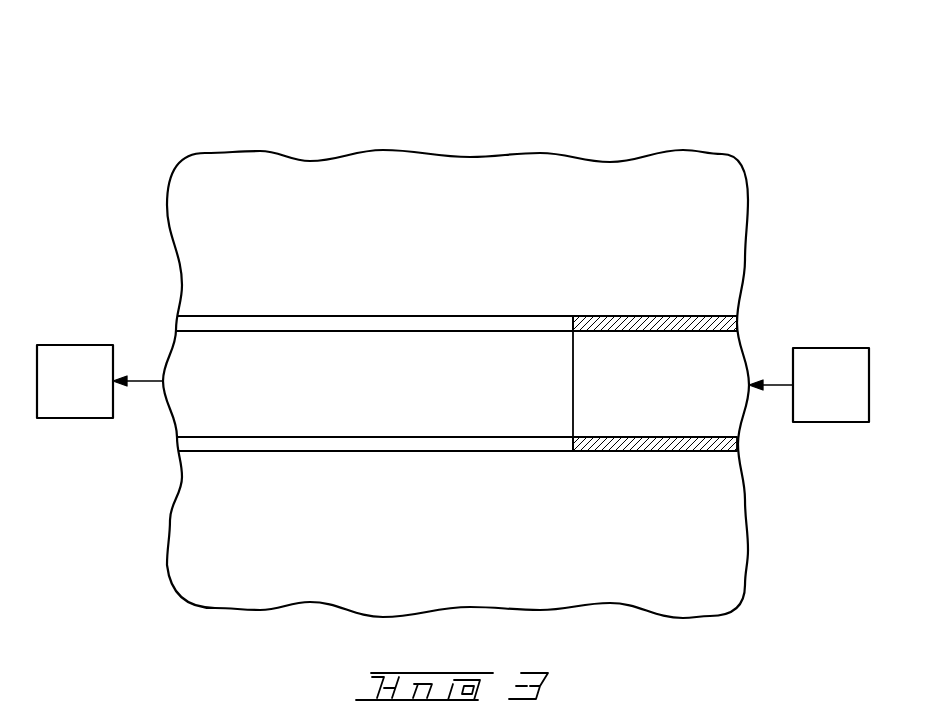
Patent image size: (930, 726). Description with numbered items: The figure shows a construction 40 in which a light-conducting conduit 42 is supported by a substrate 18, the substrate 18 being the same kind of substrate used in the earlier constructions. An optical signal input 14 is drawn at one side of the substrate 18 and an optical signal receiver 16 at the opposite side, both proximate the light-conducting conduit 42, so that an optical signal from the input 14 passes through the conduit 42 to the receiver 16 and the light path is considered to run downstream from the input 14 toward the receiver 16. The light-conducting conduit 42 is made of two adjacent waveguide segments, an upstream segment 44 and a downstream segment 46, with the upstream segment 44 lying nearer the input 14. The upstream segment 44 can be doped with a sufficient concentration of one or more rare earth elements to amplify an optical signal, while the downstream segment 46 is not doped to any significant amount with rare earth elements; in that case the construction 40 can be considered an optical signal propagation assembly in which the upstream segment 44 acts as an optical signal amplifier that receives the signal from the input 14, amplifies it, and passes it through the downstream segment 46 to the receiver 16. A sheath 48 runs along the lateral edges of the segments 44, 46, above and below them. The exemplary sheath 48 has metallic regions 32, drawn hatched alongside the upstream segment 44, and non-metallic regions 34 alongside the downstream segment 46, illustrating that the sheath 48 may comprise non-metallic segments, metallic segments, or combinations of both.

The optical signal input 14 is at (853, 400).
The optical signal receiver 16 is at (92, 397).
The substrate 18 is at (700, 215).
The metallic regions 32 is at (700, 322).
The non-metallic regions 34 is at (400, 322).
The construction 40 is at (720, 90).
The light-conducting conduit 42 is at (716, 355).
The upstream segment 44 is at (692, 396).
The downstream segment 46 is at (303, 393).
The sheath 48 is at (525, 308).